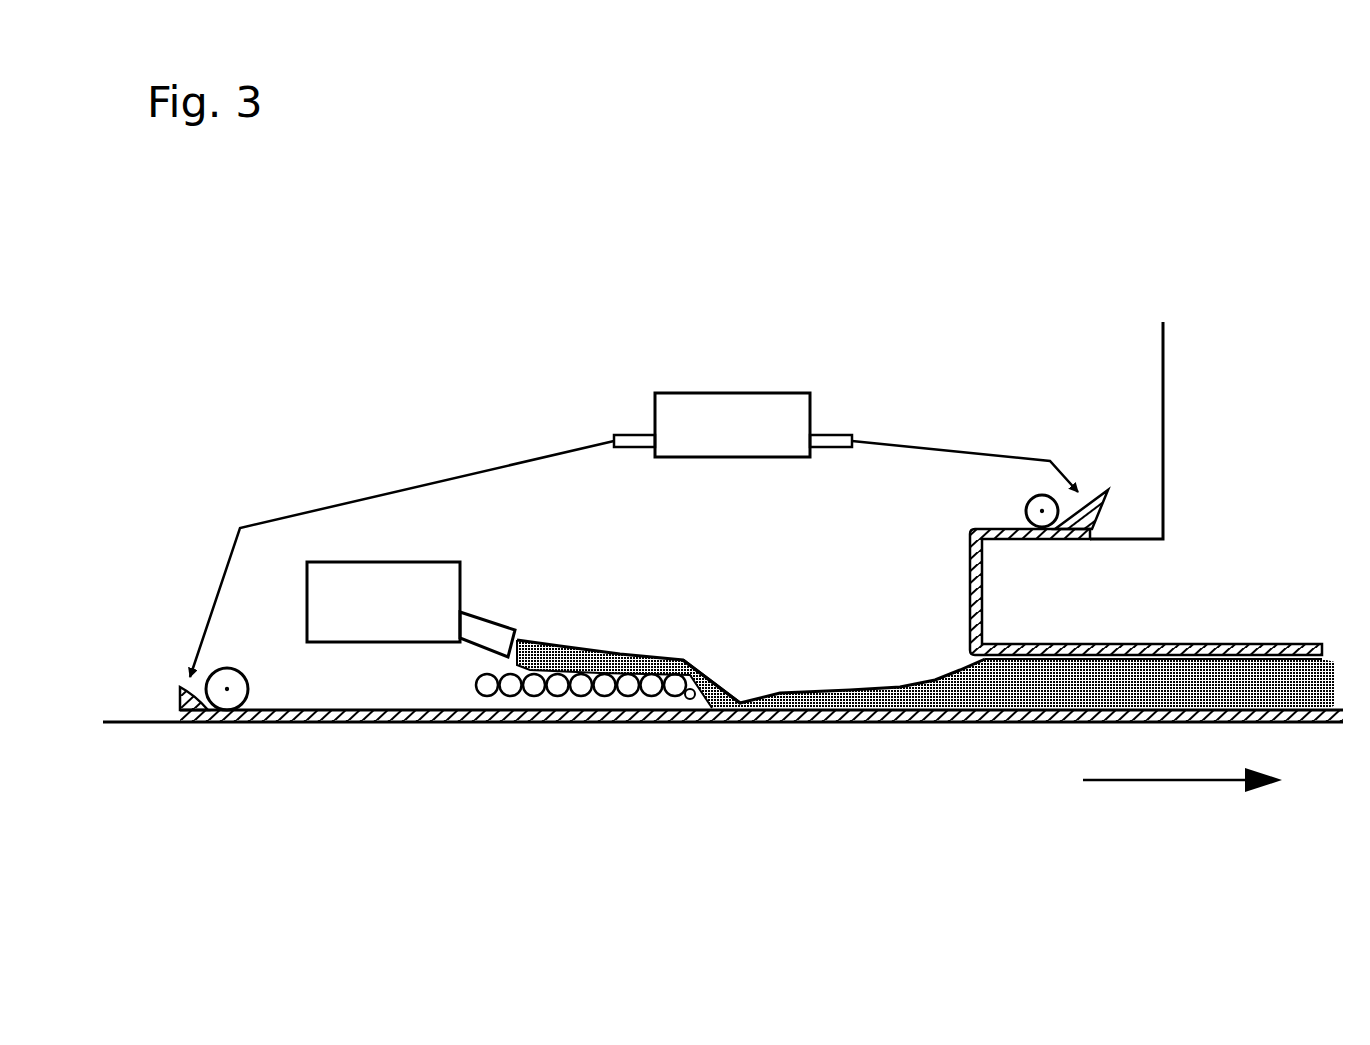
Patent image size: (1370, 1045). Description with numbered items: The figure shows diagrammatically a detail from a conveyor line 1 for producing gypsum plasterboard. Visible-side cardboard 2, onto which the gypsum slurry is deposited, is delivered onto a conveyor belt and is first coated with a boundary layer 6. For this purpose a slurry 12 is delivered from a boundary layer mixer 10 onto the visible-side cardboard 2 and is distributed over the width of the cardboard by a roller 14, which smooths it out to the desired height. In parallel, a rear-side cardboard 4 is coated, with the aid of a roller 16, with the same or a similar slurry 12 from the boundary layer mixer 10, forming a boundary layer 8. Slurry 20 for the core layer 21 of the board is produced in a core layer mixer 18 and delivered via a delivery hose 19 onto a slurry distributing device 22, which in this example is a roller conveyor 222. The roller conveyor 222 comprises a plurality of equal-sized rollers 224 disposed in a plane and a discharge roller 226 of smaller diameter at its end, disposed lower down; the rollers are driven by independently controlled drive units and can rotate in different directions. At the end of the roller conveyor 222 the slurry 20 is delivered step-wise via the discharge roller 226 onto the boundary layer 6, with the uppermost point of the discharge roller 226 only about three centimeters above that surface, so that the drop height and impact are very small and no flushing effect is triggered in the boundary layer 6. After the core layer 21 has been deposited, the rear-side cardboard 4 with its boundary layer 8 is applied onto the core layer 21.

The conveyor line 1 is at (980, 285).
The visible-side cardboard 2 is at (135, 723).
The rear-side cardboard 4 is at (1168, 348).
The boundary layer 6 is at (287, 712).
The boundary layer 8 is at (970, 548).
The boundary layer mixer 10 is at (690, 408).
The slurry 12 is at (180, 690).
The roller 14 is at (228, 690).
The roller 16 is at (1032, 502).
The core layer mixer 18 is at (408, 580).
The delivery hose 19 is at (476, 630).
The slurry 20 is at (553, 660).
The core layer 21 is at (1242, 668).
The slurry distributing device 22 is at (515, 676).
The roller conveyor 222 is at (675, 685).
The rollers 224 is at (690, 668).
The discharge roller 226 is at (683, 713).